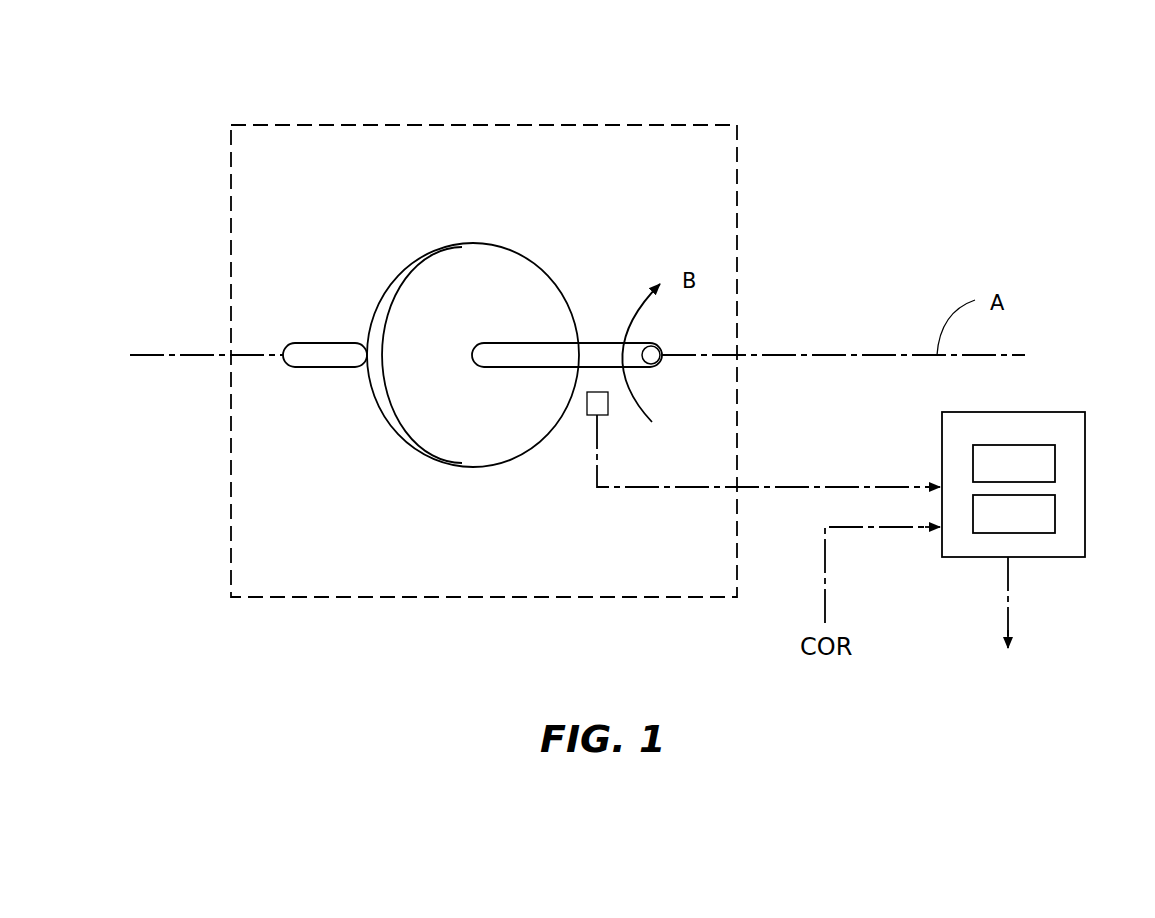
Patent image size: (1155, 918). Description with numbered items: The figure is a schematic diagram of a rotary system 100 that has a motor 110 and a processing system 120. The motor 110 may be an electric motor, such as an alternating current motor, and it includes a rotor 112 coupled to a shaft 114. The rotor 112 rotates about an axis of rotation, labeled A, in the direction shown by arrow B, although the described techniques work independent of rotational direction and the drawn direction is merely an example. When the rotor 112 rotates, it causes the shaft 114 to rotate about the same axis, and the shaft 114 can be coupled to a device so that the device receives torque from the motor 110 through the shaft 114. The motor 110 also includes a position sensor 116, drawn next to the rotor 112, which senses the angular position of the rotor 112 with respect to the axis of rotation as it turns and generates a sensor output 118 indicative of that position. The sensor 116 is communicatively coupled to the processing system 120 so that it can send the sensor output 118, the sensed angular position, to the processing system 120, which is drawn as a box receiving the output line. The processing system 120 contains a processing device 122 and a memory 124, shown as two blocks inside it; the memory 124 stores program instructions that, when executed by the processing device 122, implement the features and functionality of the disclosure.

The rotary system 100 is at (70, 104).
The motor 110 is at (737, 218).
The rotor 112 is at (525, 285).
The shaft 114 is at (325, 343).
The position sensor 116 is at (587, 417).
The sensor output 118 is at (773, 487).
The processing system 120 is at (1041, 507).
The processing device 122 is at (1014, 463).
The memory 124 is at (1014, 514).